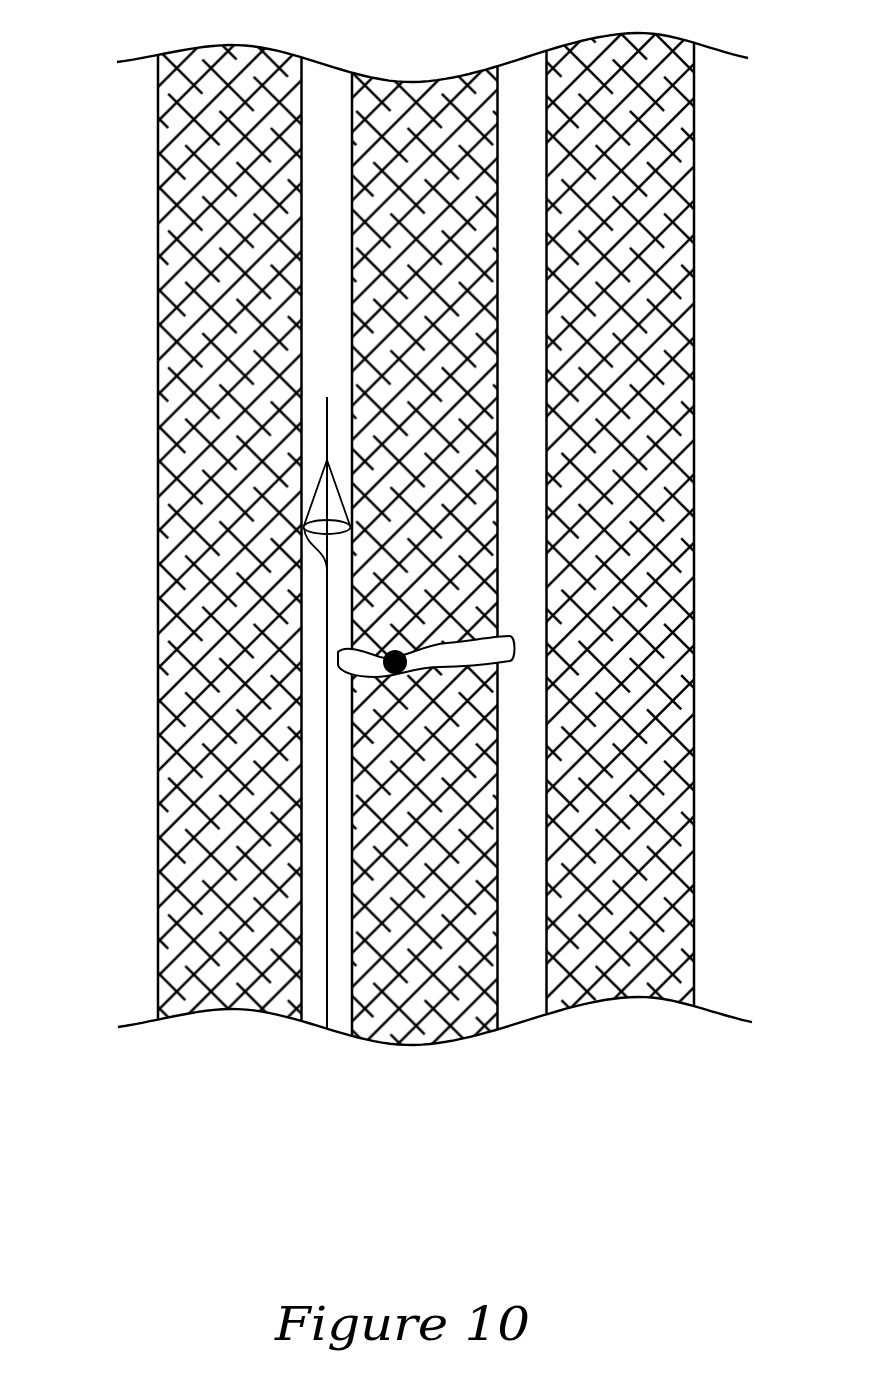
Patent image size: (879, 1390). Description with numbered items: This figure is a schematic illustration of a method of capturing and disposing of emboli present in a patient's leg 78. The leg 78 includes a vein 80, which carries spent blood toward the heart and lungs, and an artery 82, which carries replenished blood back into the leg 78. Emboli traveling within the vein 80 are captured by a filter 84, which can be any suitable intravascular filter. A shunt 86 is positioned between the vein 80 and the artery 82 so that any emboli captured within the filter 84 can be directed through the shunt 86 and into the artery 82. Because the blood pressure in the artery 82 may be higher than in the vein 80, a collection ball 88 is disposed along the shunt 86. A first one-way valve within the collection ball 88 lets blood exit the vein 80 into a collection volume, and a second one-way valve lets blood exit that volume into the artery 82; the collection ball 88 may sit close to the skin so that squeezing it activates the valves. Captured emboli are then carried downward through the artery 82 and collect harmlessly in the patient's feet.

The leg 78 is at (442, 130).
The vein 80 is at (327, 311).
The artery 82 is at (523, 440).
The filter 84 is at (327, 578).
The shunt 86 is at (455, 672).
The collection ball 88 is at (383, 665).